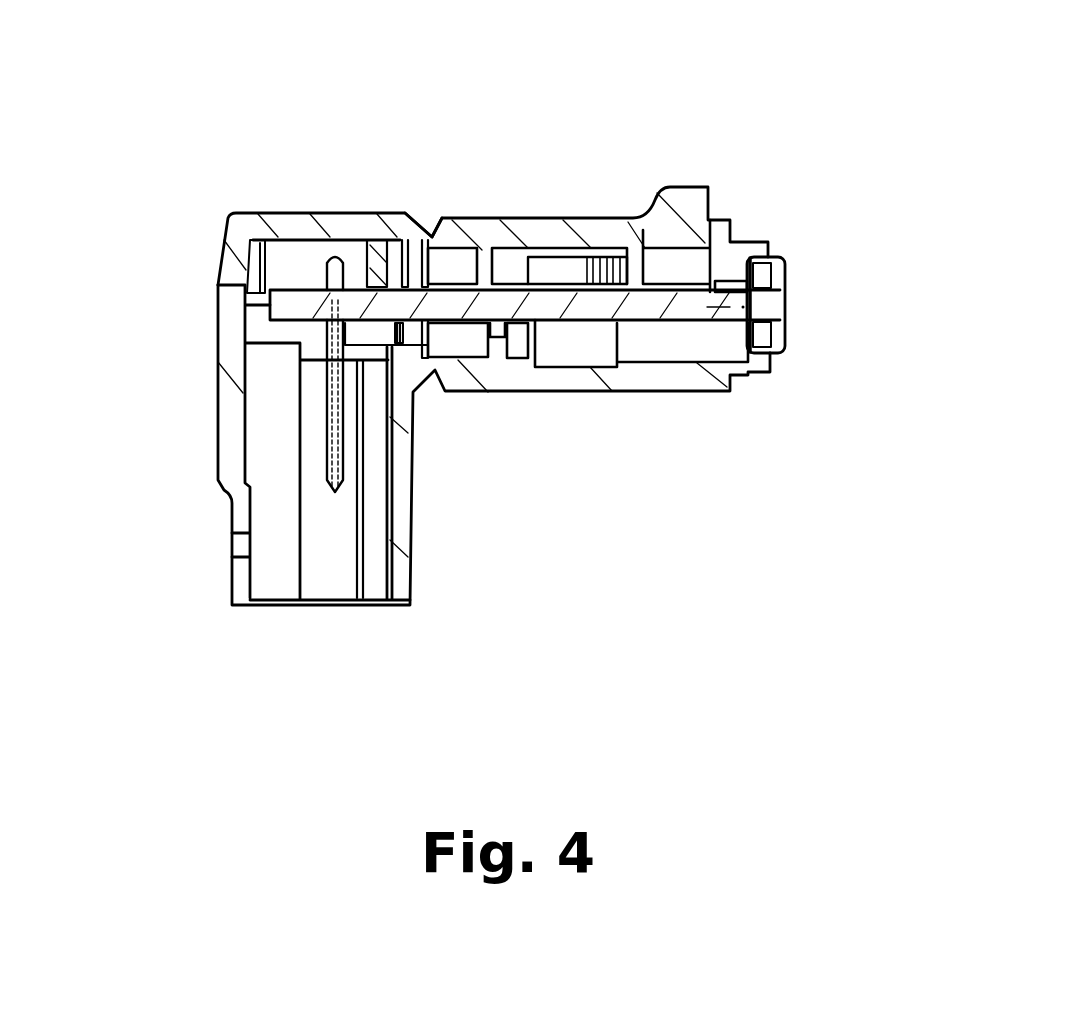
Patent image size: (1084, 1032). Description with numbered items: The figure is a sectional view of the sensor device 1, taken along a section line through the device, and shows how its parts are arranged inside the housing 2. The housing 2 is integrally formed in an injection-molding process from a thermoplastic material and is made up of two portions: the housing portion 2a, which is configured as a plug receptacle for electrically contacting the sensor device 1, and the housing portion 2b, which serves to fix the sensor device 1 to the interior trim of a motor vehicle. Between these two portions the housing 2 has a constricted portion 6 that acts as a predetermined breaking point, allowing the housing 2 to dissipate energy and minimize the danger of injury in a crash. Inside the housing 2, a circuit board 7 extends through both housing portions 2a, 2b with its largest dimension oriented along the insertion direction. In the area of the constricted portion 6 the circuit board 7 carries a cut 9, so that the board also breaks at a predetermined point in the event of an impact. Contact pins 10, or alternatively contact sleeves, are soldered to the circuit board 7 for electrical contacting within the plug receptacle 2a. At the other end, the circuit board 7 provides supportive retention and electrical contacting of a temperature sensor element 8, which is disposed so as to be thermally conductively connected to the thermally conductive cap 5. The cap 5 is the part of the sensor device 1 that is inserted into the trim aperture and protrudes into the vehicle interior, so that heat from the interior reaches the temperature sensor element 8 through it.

The sensor device 1 is at (828, 89).
The housing 2 is at (578, 380).
The housing portion 2a is at (253, 217).
The housing portion 2b is at (503, 220).
The thermally conductive cap 5 is at (782, 258).
The constricted portion 6 is at (432, 237).
The circuit board 7 is at (597, 307).
The temperature sensor element 8 is at (712, 317).
The cut 9 is at (406, 305).
The contact pins 10 is at (330, 435).